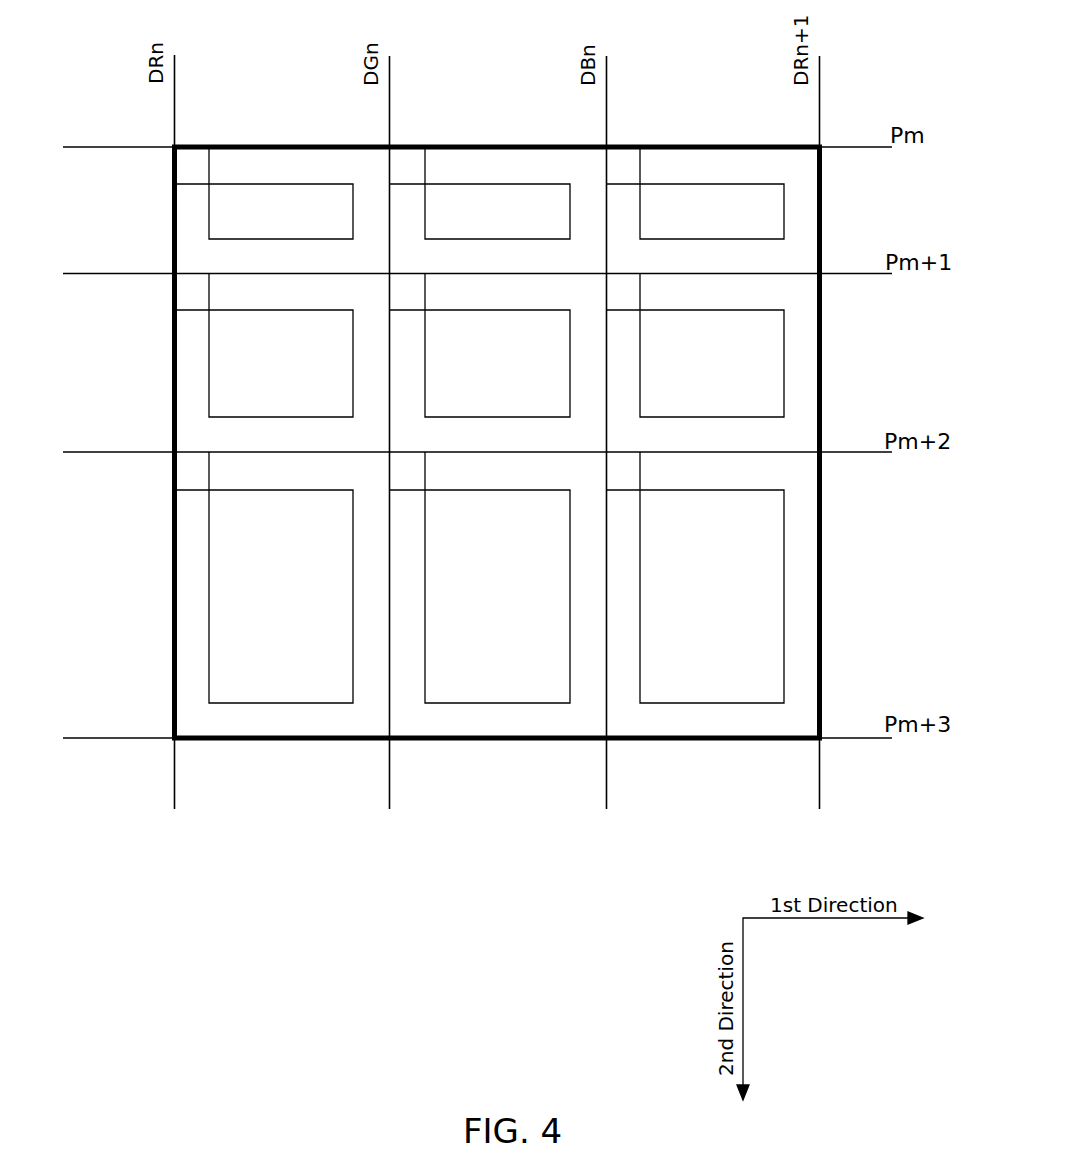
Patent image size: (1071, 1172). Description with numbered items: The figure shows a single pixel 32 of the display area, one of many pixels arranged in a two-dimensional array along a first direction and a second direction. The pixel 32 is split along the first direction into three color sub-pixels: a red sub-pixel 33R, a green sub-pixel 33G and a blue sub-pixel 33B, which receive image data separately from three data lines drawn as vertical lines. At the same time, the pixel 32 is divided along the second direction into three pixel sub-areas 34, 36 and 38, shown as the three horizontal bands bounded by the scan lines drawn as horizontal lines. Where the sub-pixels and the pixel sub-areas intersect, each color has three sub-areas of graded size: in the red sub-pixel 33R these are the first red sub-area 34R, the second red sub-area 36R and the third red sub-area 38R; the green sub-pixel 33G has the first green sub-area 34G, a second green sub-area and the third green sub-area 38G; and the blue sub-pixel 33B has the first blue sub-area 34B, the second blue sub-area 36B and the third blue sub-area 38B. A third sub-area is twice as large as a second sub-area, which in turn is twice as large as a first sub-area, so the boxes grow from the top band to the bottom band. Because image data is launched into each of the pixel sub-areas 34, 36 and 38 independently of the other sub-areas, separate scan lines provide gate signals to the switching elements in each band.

The pixel 32 is at (872, 95).
The red sub-pixel 33R is at (335, 810).
The green sub-pixel 33G is at (550, 810).
The blue sub-pixel 33B is at (763, 810).
The pixel sub-area 34 is at (467, 184).
The first red sub-area 34R is at (308, 183).
The first green sub-area 34G is at (525, 185).
The first blue sub-area 34B is at (784, 218).
The pixel sub-area 36 is at (456, 346).
The second red sub-area 36R is at (206, 343).
The second blue sub-area 36B is at (782, 345).
The pixel sub-area 38 is at (460, 618).
The third red sub-area 38R is at (305, 703).
The third green sub-area 38G is at (510, 703).
The third blue sub-area 38B is at (783, 538).